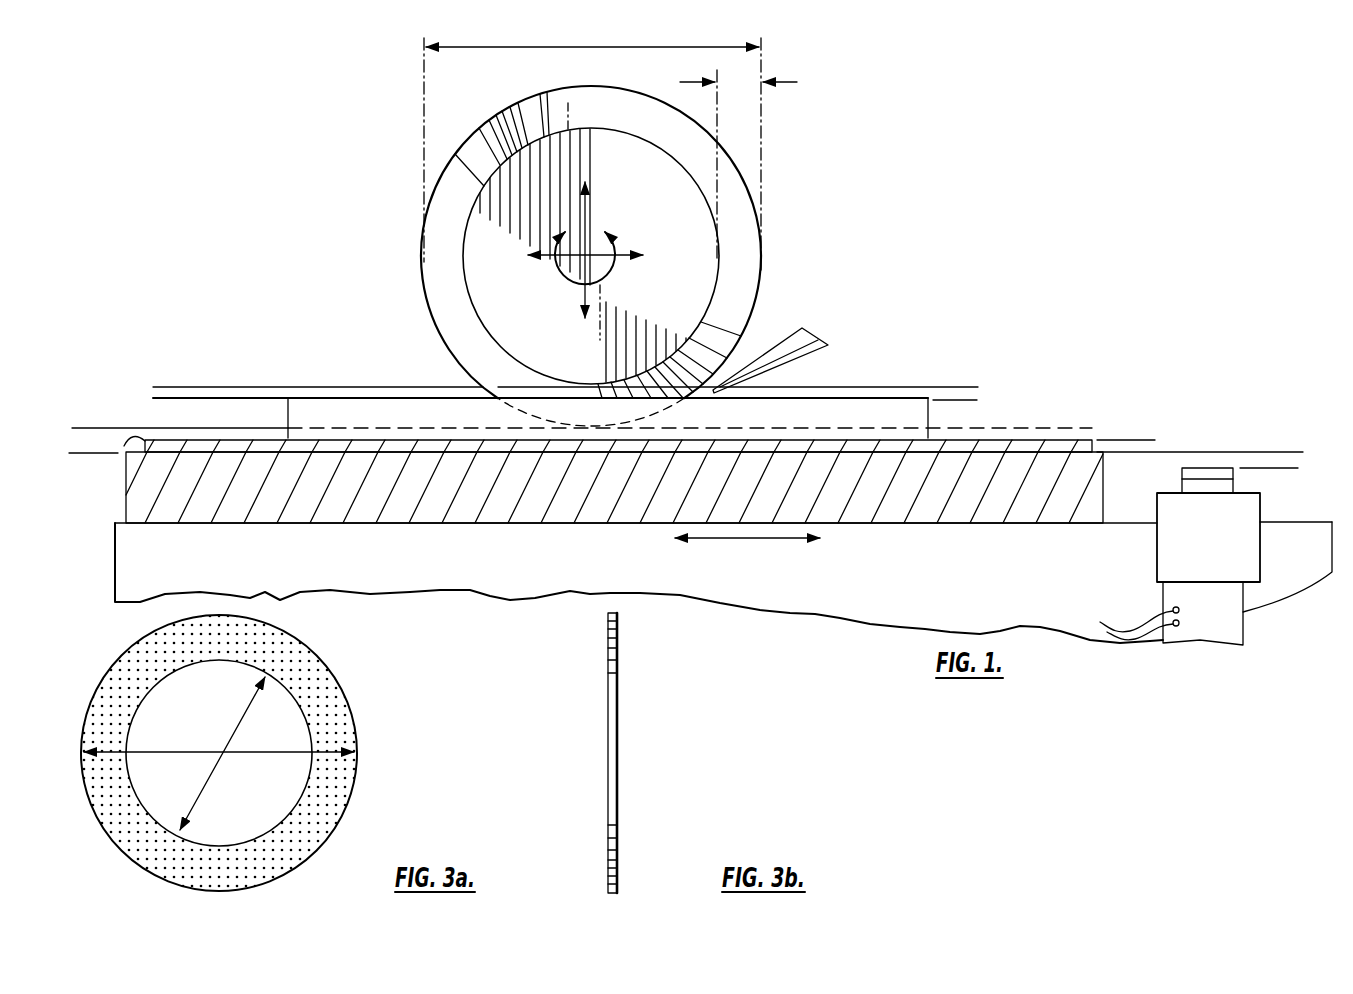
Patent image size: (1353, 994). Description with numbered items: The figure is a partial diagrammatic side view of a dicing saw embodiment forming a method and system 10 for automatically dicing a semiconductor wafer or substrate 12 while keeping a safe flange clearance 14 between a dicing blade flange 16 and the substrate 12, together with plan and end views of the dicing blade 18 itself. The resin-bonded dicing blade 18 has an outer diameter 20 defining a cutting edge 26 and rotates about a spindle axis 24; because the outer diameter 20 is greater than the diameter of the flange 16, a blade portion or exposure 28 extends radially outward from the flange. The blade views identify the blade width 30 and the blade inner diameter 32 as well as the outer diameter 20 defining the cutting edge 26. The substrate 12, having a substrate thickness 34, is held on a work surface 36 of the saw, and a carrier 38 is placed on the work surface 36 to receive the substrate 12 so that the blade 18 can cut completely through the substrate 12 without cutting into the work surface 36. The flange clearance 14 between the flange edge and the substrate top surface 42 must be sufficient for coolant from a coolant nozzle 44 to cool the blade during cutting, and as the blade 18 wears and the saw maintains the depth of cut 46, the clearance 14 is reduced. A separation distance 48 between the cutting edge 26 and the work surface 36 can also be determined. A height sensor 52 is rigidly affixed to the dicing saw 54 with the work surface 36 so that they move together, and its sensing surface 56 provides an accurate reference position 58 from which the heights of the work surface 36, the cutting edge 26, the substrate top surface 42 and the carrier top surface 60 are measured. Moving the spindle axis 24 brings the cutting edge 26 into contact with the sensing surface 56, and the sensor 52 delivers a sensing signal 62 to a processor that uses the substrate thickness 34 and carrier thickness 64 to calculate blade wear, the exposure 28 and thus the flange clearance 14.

In FIG. 1, the method and system 10 is at (520, 570).
In FIG. 1, the substrate 12 is at (884, 398).
In FIG. 1, the flange clearance 14 is at (168, 422).
In FIG. 1, the dicing blade flange 16 is at (693, 280).
In FIG. 1, the dicing blade 18 is at (752, 268).
In FIG. 3A, the dicing blade 18 is at (302, 662).
In FIG. 3B, the dicing blade 18 is at (619, 675).
In FIG. 1, the blade outer diameter 20 is at (534, 50).
In FIG. 3A, the blade outer diameter 20 is at (176, 752).
In FIG. 1, the spindle axis 24 is at (597, 262).
In FIG. 1, the blade cutting edge 26 is at (425, 296).
In FIG. 3A, the blade cutting edge 26 is at (333, 835).
In FIG. 3B, the blade cutting edge 26 is at (605, 900).
In FIG. 1, the blade exposure 28 is at (797, 82).
In FIG. 3B, the blade width 30 is at (570, 812).
In FIG. 3A, the blade inner diameter 32 is at (216, 770).
In FIG. 1, the substrate thickness 34 is at (962, 360).
In FIG. 1, the work surface 36 is at (126, 448).
In FIG. 1, the carrier 38 is at (186, 455).
In FIG. 1, the substrate top surface 42 is at (820, 398).
In FIG. 1, the coolant nozzle 44 is at (810, 338).
In FIG. 1, the depth of cut 46 is at (767, 366).
In FIG. 1, the separation distance 48 is at (90, 480).
In FIG. 1, the height sensor 52 is at (1232, 542).
In FIG. 1, the dicing saw 54 is at (1300, 570).
In FIG. 1, the sensing surface 56 is at (1200, 468).
In FIG. 1, the reference position 58 is at (1270, 504).
In FIG. 1, the carrier top surface 60 is at (1005, 438).
In FIG. 1, the sensing signal 62 is at (1170, 610).
In FIG. 1, the carrier thickness 64 is at (1133, 492).